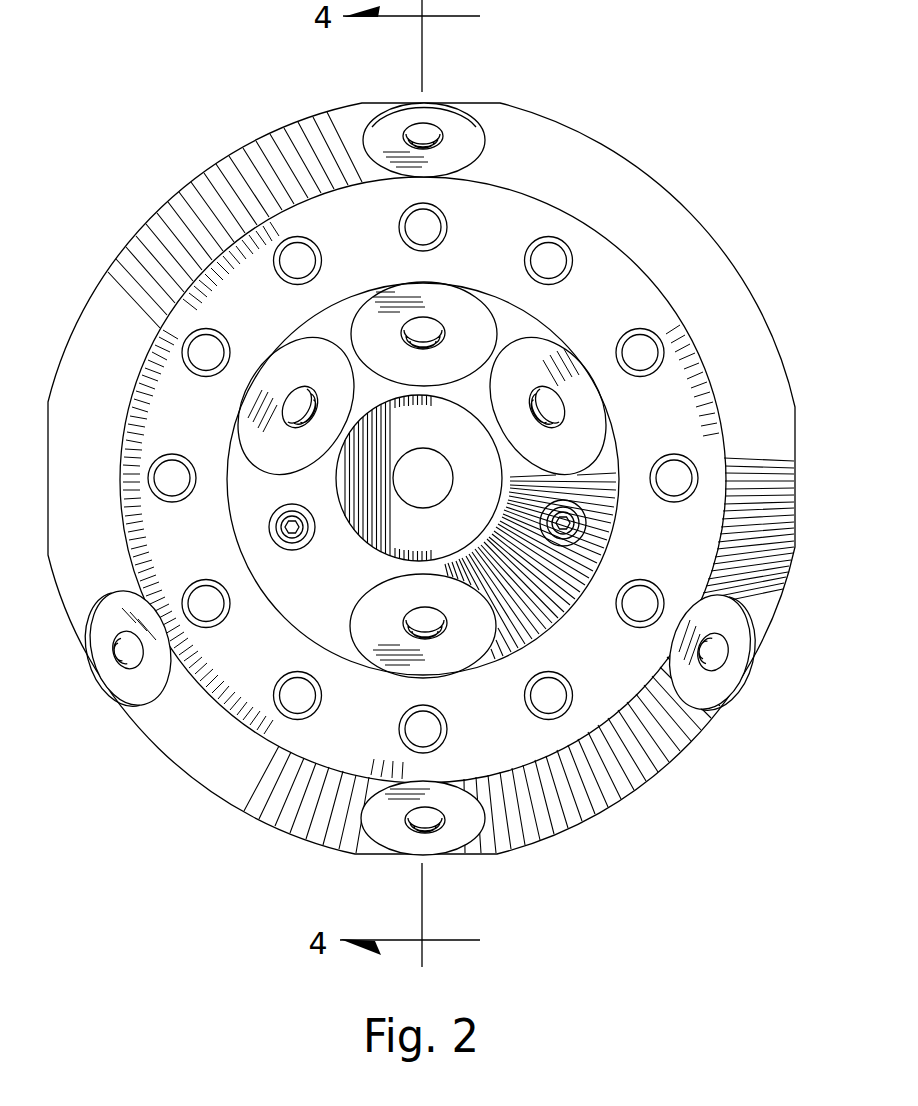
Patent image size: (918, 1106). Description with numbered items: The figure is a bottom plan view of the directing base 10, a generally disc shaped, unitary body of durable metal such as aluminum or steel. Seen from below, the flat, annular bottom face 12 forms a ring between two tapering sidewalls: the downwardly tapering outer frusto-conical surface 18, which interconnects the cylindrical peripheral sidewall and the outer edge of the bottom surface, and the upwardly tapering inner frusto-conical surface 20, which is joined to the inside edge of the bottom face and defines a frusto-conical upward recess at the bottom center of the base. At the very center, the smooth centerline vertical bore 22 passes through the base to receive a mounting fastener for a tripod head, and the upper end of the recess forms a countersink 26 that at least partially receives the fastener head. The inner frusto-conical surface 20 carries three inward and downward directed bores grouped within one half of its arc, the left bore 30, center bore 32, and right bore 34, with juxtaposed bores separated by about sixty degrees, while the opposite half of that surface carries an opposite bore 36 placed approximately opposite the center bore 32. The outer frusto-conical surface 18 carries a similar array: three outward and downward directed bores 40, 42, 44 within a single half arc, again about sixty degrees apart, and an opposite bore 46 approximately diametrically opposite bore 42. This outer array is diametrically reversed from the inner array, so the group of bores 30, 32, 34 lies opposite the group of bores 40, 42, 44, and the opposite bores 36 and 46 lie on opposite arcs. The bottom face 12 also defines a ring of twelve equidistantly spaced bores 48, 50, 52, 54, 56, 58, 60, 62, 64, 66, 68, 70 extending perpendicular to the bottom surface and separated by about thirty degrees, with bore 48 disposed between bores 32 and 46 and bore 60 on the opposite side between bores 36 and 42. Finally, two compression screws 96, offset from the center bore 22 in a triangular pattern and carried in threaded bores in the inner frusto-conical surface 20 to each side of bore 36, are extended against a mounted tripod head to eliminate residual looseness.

The directing base 10 is at (144, 124).
The bottom face 12 is at (538, 213).
The outer frusto-conical surface 18 is at (680, 226).
The inner frusto-conical surface 20 is at (310, 607).
The centerline vertical bore 22 is at (430, 479).
The countersink 26 is at (387, 533).
The left bore 30 is at (297, 403).
The center bore 32 is at (423, 333).
The right bore 34 is at (550, 407).
The opposite bore 36 is at (425, 622).
The outward and downward directed bore 40 is at (128, 652).
The outward and downward directed bore 42 is at (424, 820).
The outward and downward directed bore 44 is at (715, 655).
The opposite bore 46 is at (425, 133).
The bore 48 is at (425, 225).
The bore 50 is at (550, 260).
The bore 52 is at (640, 352).
The bore 54 is at (672, 478).
The bore 56 is at (638, 607).
The bore 58 is at (548, 696).
The bore 60 is at (423, 730).
The bore 62 is at (298, 696).
The bore 64 is at (205, 605).
The bore 66 is at (175, 478).
The bore 68 is at (207, 355).
The bore 70 is at (300, 258).
The compression screws 96 is at (290, 526).